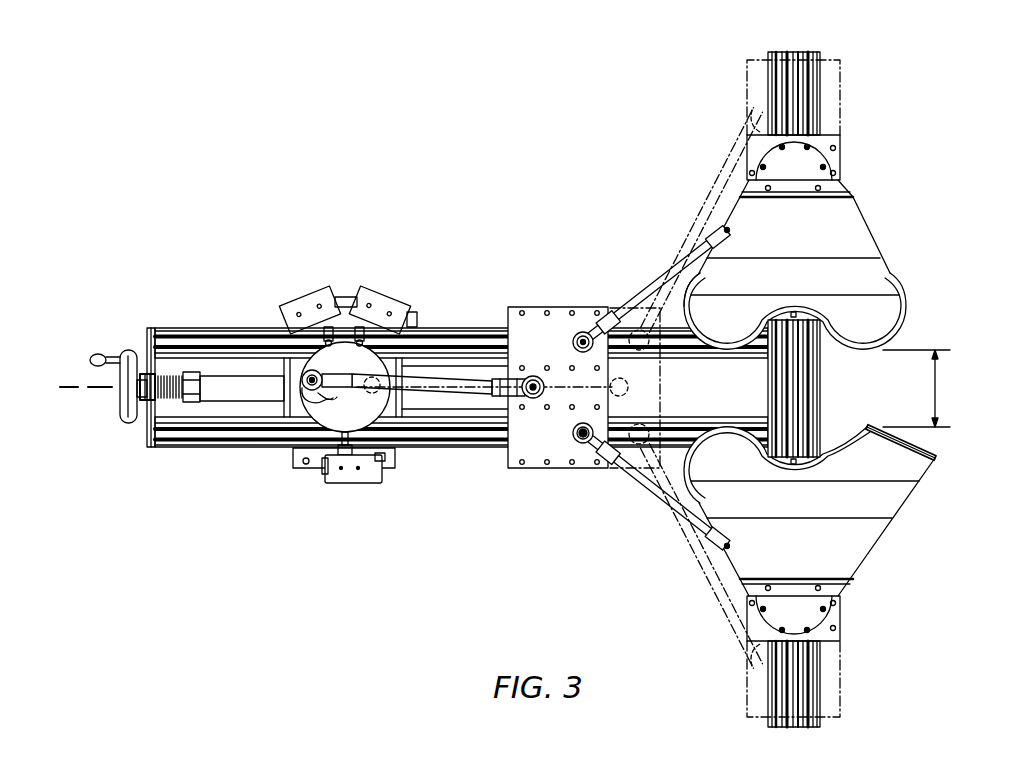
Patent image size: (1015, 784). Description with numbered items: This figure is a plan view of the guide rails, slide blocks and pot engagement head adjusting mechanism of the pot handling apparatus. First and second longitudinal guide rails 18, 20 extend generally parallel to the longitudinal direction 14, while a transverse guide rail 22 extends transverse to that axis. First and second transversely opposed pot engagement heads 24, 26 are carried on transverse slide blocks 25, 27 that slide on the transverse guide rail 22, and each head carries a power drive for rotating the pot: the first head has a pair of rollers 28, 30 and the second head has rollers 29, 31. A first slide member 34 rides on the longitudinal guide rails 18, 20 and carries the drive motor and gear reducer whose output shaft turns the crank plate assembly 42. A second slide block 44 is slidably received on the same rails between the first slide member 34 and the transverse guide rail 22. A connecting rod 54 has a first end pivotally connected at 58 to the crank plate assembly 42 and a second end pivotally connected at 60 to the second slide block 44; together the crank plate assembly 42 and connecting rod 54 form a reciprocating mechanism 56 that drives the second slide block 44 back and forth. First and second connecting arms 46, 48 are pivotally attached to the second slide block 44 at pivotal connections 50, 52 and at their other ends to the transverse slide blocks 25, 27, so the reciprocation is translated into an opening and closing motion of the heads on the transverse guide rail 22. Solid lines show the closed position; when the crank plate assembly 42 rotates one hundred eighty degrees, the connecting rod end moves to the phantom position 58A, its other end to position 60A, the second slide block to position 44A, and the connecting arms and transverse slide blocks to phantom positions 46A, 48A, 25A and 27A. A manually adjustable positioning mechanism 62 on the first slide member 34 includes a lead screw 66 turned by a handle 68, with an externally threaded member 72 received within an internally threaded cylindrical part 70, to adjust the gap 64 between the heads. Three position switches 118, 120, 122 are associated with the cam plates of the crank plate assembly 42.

The longitudinal direction 14 is at (86, 390).
The first longitudinal guide rail 18 is at (233, 327).
The second longitudinal guide rail 20 is at (185, 448).
The transverse guide rail 22 is at (822, 92).
The first pot engagement head 24 is at (848, 216).
The first transverse slide block 25 is at (842, 157).
The phantom position of first transverse slide block 25A is at (842, 60).
The second pot engagement head 26 is at (895, 507).
The second transverse slide block 27 is at (843, 620).
The phantom position of second transverse slide block 27A is at (842, 702).
The roller 28 is at (690, 280).
The roller 29 is at (740, 428).
The roller 30 is at (903, 306).
The roller 31 is at (862, 428).
The first slide member 34 is at (300, 470).
The crank plate assembly 42 is at (308, 398).
The second slide block 44 is at (553, 313).
The phantom position of second slide block 44A is at (650, 470).
The first connecting arm 46 is at (645, 283).
The phantom position of first connecting arm 46A is at (735, 165).
The second connecting arm 48 is at (678, 518).
The phantom position of second connecting arm 48A is at (737, 612).
The pivotal connection 50 is at (583, 331).
The pivotal connection 52 is at (580, 440).
The connecting rod 54 is at (460, 392).
The reciprocating mechanism 56 is at (380, 432).
The first end pivotal connection of connecting rod 58 is at (302, 372).
The second position of connecting rod first end 58A is at (370, 395).
The second end pivotal connection of connecting rod 60 is at (533, 376).
The phantom position of connecting rod second end 60A is at (626, 393).
The manually adjustable positioning mechanism 62 is at (178, 366).
The gap 64 is at (938, 388).
The lead screw 66 is at (178, 326).
The handle 68 is at (118, 408).
The internally threaded cylindrical part 70 is at (217, 382).
The externally threaded member 72 is at (176, 380).
The position switch 118 is at (325, 298).
The position switch 120 is at (350, 484).
The position switch 122 is at (392, 304).